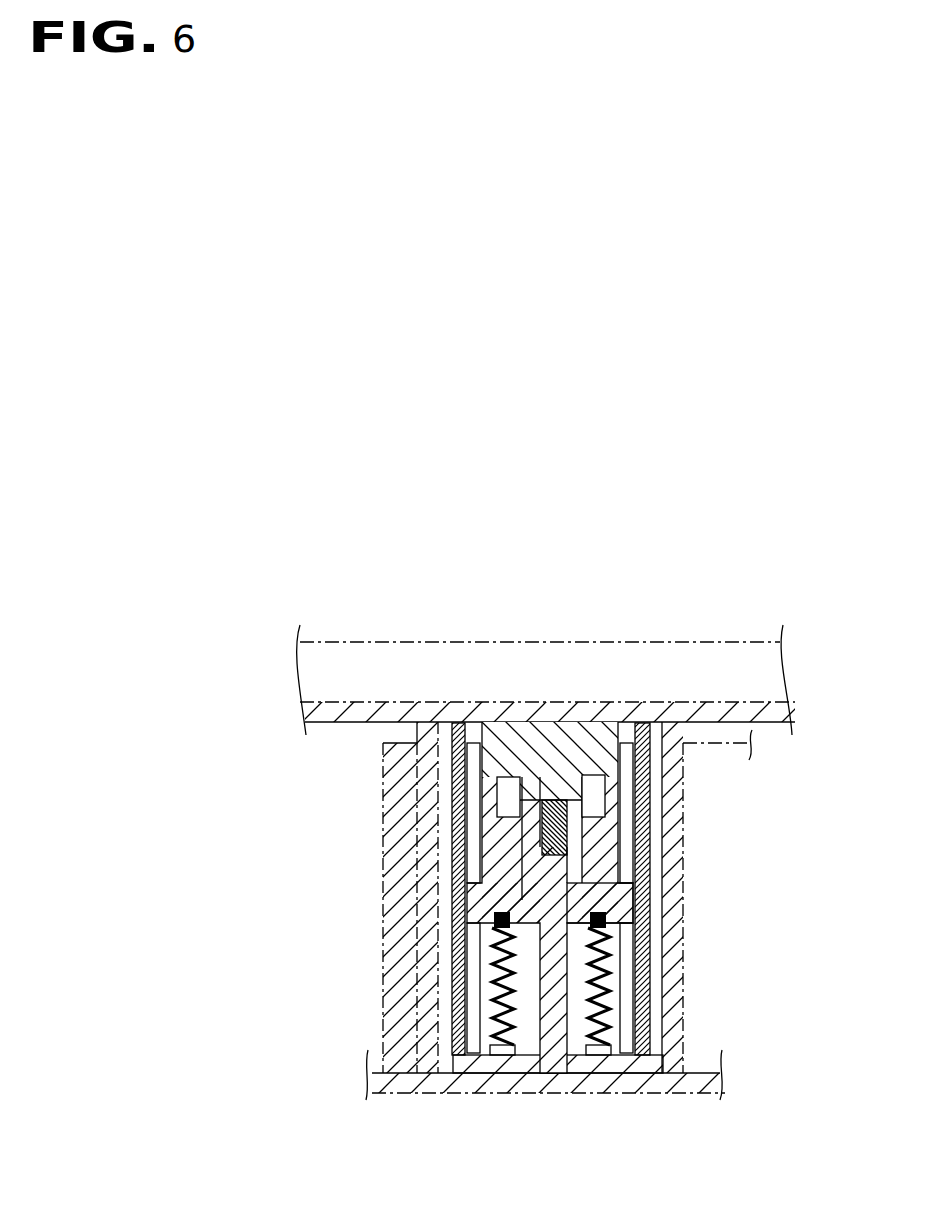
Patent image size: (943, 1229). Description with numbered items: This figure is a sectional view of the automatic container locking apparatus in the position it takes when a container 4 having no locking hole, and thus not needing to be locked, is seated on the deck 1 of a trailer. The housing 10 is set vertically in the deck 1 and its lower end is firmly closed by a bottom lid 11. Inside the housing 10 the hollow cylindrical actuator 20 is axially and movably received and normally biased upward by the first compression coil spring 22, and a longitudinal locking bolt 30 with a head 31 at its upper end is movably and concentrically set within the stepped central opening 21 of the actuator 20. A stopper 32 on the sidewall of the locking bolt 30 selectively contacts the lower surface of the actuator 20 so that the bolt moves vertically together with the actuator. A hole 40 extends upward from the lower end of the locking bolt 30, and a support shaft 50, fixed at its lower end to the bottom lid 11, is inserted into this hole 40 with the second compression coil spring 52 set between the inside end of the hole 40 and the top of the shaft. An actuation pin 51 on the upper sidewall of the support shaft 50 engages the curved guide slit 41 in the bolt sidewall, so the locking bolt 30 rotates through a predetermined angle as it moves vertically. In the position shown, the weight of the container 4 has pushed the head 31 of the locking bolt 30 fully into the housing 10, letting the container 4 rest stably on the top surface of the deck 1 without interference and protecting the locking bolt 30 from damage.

The deck 1 is at (392, 1093).
The container 4 is at (427, 712).
The housing 10 is at (452, 1002).
The bottom lid 11 is at (567, 1073).
The cylindrical actuator 20 is at (620, 800).
The stepped central opening 21 is at (650, 742).
The first compression coil spring 22 is at (600, 1010).
The locking bolt 30 is at (497, 795).
The head 31 is at (560, 723).
The stopper 32 is at (480, 942).
The hole 40 is at (605, 794).
The guide slit 41 is at (635, 943).
The support shaft 50 is at (500, 1027).
The actuation pin 51 is at (620, 865).
The second compression coil spring 52 is at (467, 852).